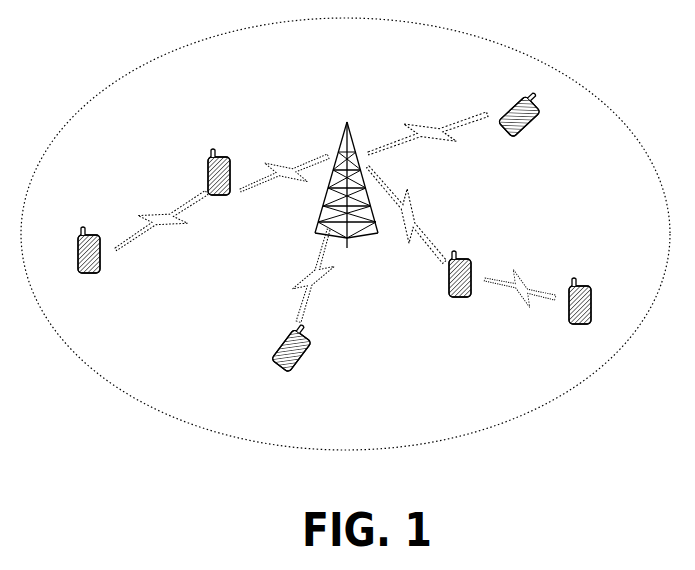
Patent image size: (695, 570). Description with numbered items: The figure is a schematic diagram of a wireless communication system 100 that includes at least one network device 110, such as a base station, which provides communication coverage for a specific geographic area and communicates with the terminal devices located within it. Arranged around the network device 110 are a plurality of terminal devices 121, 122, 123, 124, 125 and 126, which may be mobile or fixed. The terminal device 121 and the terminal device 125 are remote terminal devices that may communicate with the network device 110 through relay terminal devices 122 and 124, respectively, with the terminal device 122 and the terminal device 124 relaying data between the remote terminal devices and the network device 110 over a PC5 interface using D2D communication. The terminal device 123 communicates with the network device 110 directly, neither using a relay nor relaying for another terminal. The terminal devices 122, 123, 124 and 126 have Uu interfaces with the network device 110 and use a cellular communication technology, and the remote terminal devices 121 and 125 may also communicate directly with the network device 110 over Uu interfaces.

The wireless communication system 100 is at (125, 40).
The network device 110 is at (348, 113).
The terminal device 121 is at (82, 226).
The terminal device 122 is at (207, 166).
The terminal device 123 is at (517, 99).
The terminal device 124 is at (470, 260).
The terminal device 125 is at (593, 285).
The terminal device 126 is at (283, 350).